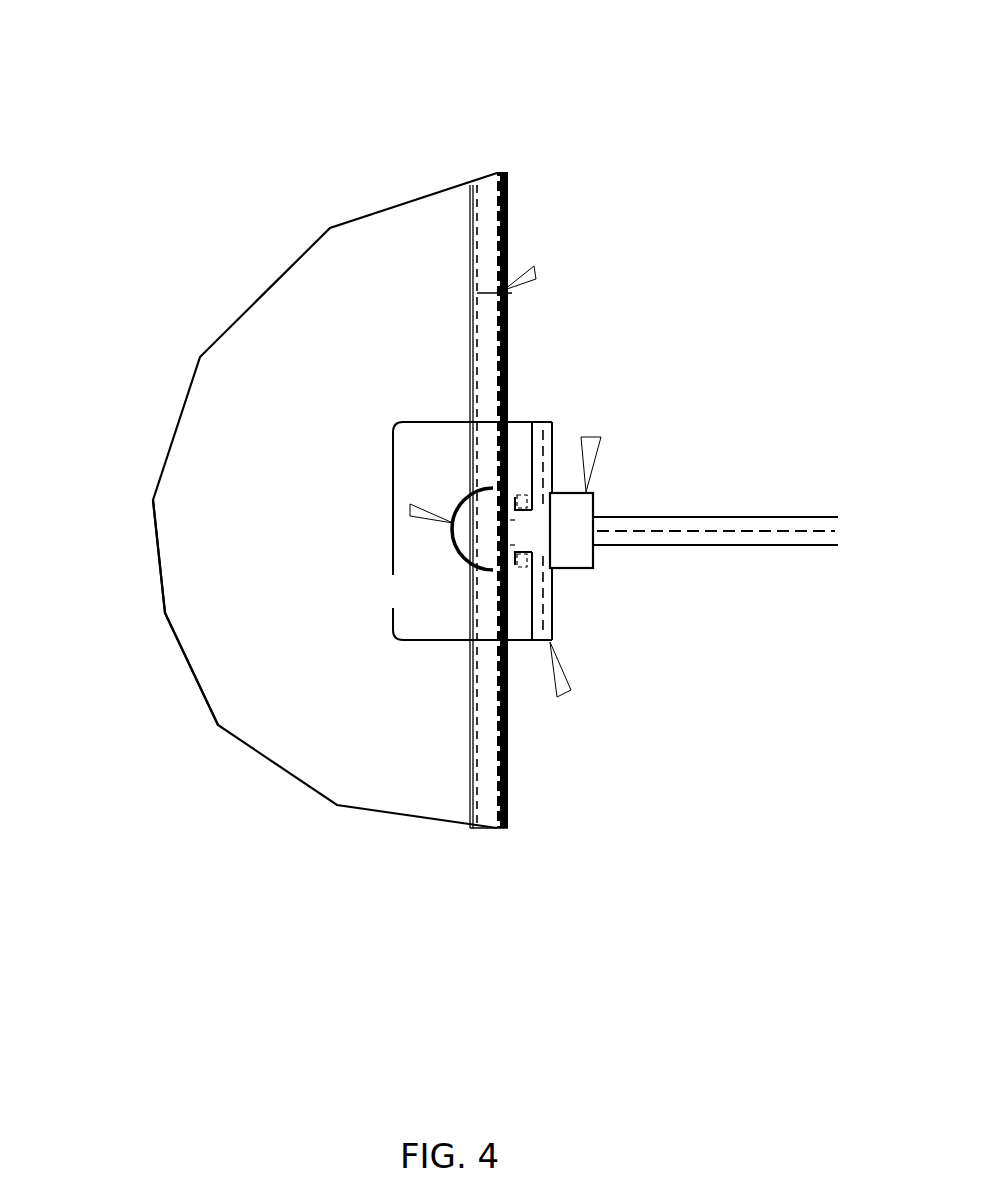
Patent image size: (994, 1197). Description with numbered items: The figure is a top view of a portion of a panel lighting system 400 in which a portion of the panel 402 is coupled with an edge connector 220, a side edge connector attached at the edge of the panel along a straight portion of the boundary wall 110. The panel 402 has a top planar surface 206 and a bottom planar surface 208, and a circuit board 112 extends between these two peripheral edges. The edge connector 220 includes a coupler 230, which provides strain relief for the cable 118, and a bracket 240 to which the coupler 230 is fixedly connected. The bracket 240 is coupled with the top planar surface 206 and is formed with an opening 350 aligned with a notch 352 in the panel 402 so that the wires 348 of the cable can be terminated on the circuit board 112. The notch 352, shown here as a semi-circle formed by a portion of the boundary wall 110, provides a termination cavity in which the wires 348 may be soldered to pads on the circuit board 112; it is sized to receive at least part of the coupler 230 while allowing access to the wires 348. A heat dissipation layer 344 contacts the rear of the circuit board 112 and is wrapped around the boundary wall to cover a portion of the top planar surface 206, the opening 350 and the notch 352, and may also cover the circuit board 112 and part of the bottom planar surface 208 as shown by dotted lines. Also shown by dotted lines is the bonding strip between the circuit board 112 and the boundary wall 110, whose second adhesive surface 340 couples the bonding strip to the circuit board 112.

The panel lighting system 400 is at (259, 61).
The panel 402 is at (158, 304).
The top planar surface 206 is at (346, 282).
The bottom planar surface 208 is at (160, 612).
The heat dissipation layer 344 is at (478, 205).
The circuit board 112 is at (523, 205).
The second adhesive surface 340 is at (534, 273).
The edge connector 220 is at (563, 365).
The coupler 230 is at (598, 459).
The wires 348 is at (677, 530).
The cable 118 is at (748, 545).
The bracket 240 is at (570, 695).
The boundary wall 110 is at (499, 852).
The opening 350 is at (452, 556).
The notch 352 is at (243, 465).